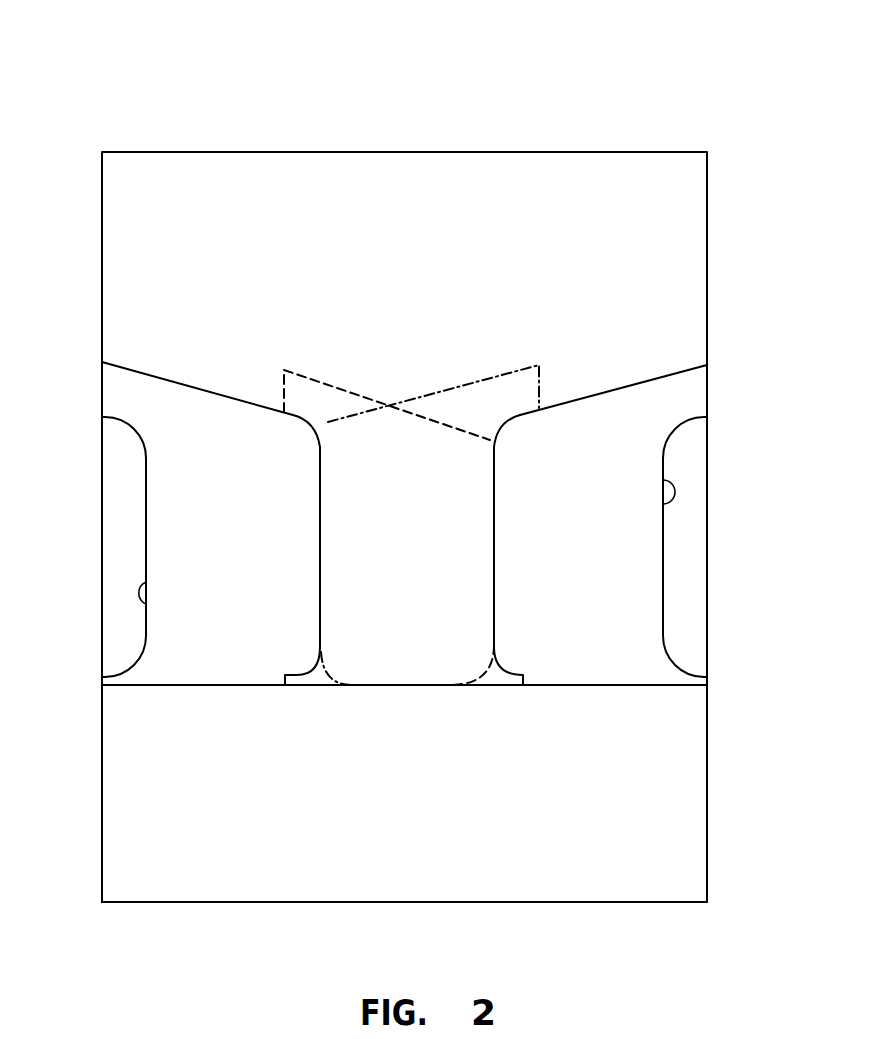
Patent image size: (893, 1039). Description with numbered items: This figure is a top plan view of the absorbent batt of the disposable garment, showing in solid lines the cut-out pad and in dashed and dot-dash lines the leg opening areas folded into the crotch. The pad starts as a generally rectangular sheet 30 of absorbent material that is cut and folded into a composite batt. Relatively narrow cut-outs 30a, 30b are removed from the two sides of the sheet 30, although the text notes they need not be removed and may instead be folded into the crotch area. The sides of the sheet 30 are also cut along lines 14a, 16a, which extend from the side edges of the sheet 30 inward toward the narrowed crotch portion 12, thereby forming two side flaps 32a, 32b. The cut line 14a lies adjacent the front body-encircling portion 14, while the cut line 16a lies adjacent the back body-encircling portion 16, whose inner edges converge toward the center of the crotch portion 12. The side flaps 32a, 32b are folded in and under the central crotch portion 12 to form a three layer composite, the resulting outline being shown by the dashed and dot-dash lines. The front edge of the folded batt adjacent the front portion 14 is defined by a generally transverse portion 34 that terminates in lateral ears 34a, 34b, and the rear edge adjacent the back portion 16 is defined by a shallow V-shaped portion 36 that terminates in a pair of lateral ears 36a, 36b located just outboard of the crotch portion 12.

The sheet 30 is at (543, 106).
The back body-encircling portion 16 is at (537, 243).
The cut line 16a is at (166, 379).
The crotch portion 12 is at (418, 573).
The front body-encircling portion 14 is at (460, 845).
The cut line 14a is at (200, 686).
The side flap 32a is at (640, 593).
The side flap 32b is at (175, 508).
The cut-out 30a is at (663, 506).
The cut-out 30b is at (146, 605).
The shallow V-shaped portion 36 is at (423, 371).
The lateral ear 36a is at (312, 392).
The lateral ear 36b is at (514, 392).
The transverse portion 34 is at (405, 704).
The lateral ear 34a is at (315, 672).
The lateral ear 34b is at (497, 670).